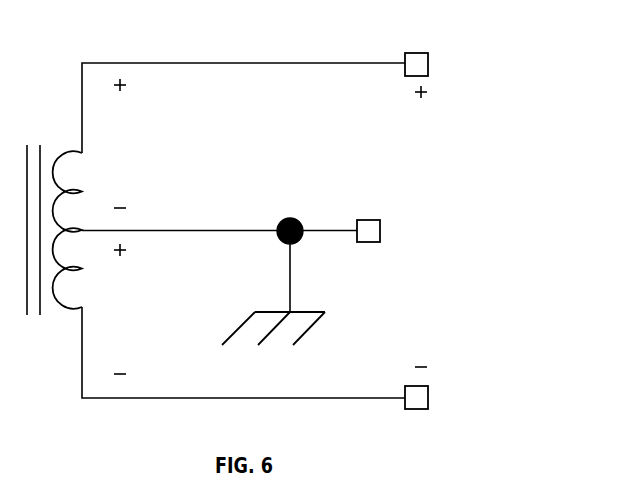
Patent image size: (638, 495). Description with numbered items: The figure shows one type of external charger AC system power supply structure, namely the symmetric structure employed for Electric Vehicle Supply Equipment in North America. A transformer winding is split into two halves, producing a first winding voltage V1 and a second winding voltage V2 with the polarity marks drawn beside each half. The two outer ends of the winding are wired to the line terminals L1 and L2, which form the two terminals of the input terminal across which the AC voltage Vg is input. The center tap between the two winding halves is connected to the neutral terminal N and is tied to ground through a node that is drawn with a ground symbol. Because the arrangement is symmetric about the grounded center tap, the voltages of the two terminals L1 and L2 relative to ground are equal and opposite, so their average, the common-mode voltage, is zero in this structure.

The line 1 terminal L1 is at (434, 74).
The line 2 terminal L2 is at (435, 392).
The neutral terminal N is at (368, 246).
The first winding voltage V1 is at (143, 143).
The second winding voltage V2 is at (142, 309).
The AC voltage Vg is at (418, 235).